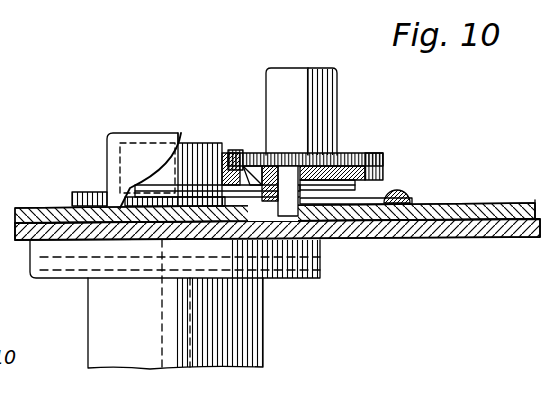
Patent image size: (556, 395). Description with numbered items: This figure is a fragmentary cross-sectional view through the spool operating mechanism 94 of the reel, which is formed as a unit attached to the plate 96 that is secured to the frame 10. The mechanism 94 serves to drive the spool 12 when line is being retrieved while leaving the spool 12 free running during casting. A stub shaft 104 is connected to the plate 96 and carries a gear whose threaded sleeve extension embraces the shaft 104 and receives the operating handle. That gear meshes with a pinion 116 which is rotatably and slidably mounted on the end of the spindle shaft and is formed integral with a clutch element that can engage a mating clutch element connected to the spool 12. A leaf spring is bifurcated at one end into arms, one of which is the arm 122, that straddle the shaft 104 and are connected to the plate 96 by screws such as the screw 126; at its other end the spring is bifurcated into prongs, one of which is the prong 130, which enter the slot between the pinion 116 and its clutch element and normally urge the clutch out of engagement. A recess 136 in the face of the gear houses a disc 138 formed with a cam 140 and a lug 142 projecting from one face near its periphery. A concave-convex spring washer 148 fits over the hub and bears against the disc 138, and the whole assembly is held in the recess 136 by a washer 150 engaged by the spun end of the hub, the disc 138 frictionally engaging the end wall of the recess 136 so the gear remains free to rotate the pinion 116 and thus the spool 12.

The frame 10 is at (501, 237).
The spool 12 is at (258, 325).
The operating mechanism 94 is at (330, 98).
The plate 96 is at (510, 205).
The stub shaft 104 is at (330, 240).
The pinion 116 is at (181, 133).
The arm 122 is at (412, 198).
The screw 126 is at (388, 188).
The arm or prong 130 is at (150, 186).
The recess 136 is at (385, 157).
The disc 138 is at (358, 152).
The cam 140 is at (222, 152).
The lug 142 is at (262, 152).
The spring washer 148 is at (348, 186).
The washer 150 is at (322, 190).